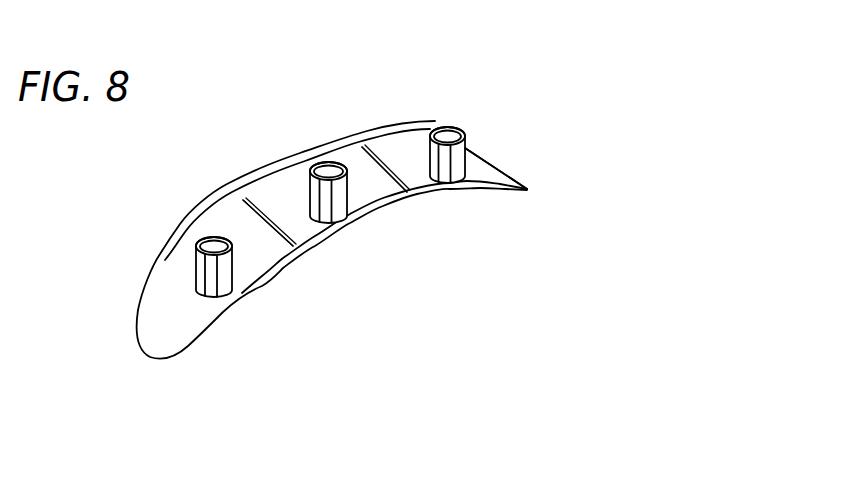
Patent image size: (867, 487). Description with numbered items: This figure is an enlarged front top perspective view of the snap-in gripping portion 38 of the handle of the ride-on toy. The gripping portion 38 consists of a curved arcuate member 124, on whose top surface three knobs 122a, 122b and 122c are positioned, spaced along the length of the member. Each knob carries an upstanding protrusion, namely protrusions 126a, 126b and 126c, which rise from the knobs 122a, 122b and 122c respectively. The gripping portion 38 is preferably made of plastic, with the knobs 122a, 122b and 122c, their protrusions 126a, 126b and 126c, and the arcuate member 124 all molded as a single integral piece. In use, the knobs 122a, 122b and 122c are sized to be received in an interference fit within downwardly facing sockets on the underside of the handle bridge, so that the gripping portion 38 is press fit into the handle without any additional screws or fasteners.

The snap-in gripping portion 38 is at (420, 56).
The arcuate member 124 is at (167, 325).
The protrusion 126a is at (197, 271).
The protrusion 126b is at (311, 195).
The protrusion 126c is at (431, 162).
The knob 122a is at (233, 263).
The knob 122b is at (347, 186).
The knob 122c is at (465, 157).